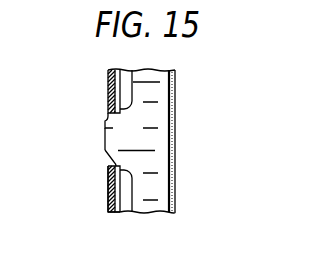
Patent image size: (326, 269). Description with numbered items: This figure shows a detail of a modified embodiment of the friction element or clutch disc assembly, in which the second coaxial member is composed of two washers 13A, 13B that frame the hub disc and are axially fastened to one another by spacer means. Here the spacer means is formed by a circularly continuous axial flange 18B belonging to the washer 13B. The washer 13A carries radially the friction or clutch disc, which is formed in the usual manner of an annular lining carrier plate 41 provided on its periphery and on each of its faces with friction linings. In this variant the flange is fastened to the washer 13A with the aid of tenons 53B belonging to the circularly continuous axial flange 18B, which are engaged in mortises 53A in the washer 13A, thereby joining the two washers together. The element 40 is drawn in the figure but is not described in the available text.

The housing body 40 is at (146, 69).
The annular lining carrier plate 41 is at (108, 200).
The washer 13A is at (120, 213).
The washer 13B is at (176, 204).
The mortise 53A is at (105, 128).
The tenon 53B is at (105, 138).
The circularly continuous axial flange 18B is at (136, 140).